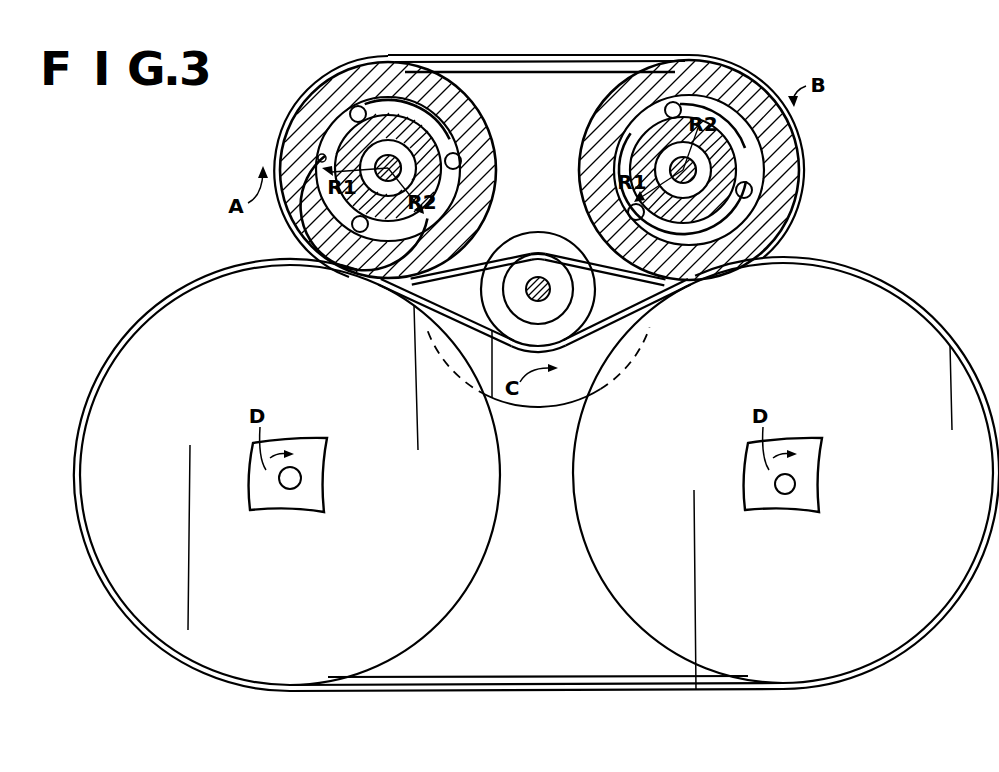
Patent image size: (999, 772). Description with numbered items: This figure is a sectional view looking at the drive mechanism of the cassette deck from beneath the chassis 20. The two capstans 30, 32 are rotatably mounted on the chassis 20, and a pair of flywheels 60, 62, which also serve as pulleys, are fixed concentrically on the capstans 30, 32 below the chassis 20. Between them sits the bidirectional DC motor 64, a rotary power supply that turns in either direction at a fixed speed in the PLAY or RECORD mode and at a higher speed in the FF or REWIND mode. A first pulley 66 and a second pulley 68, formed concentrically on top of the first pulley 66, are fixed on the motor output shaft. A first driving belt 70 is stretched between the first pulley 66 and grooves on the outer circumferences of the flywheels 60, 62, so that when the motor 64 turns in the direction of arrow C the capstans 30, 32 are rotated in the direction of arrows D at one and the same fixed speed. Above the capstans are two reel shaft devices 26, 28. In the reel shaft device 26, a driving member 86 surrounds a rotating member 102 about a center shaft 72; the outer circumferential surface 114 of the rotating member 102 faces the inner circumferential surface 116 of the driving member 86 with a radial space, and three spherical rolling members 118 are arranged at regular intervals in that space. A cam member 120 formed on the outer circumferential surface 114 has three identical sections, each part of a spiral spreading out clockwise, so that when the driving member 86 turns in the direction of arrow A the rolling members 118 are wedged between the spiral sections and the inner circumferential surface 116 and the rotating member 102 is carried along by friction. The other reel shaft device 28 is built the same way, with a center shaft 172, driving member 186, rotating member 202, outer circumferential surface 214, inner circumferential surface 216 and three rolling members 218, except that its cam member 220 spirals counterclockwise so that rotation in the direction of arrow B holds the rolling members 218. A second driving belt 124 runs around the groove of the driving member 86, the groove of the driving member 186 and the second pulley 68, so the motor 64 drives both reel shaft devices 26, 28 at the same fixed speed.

The chassis 20 is at (320, 488).
The reel shaft device 26 is at (336, 80).
The reel shaft device 28 is at (740, 76).
The capstan 30 is at (292, 490).
The capstan 32 is at (785, 495).
The flywheel 60 is at (452, 598).
The flywheel 62 is at (617, 596).
The bidirectional DC motor 64 is at (520, 402).
The first pulley 66 is at (585, 290).
The second pulley 68 is at (552, 320).
The first driving belt 70 is at (535, 676).
The center shaft 72 is at (445, 122).
The driving member 86 is at (318, 132).
The rotating member 102 is at (420, 112).
The outer circumferential surface 114 is at (455, 112).
The inner circumferential surface 116 is at (318, 159).
The rolling members 118 is at (350, 111).
The cam member 120 is at (376, 108).
The second driving belt 124 is at (535, 56).
The center shaft 172 is at (665, 166).
The driving member 186 is at (685, 80).
The rotating member 202 is at (705, 90).
The outer circumferential surface 214 is at (775, 180).
The inner circumferential surface 216 is at (765, 140).
The rolling members 218 is at (665, 110).
The cam member 220 is at (772, 80).